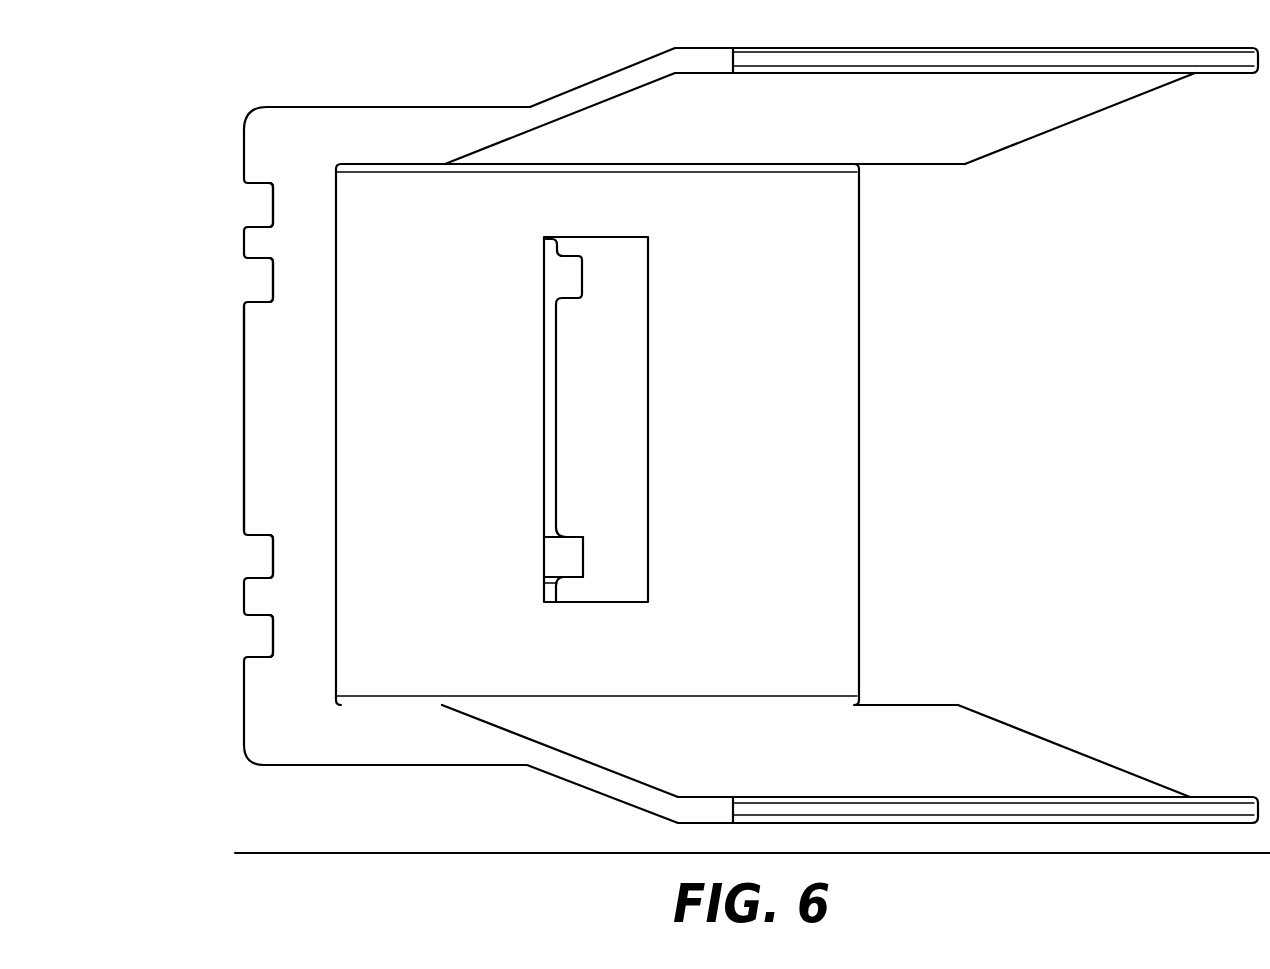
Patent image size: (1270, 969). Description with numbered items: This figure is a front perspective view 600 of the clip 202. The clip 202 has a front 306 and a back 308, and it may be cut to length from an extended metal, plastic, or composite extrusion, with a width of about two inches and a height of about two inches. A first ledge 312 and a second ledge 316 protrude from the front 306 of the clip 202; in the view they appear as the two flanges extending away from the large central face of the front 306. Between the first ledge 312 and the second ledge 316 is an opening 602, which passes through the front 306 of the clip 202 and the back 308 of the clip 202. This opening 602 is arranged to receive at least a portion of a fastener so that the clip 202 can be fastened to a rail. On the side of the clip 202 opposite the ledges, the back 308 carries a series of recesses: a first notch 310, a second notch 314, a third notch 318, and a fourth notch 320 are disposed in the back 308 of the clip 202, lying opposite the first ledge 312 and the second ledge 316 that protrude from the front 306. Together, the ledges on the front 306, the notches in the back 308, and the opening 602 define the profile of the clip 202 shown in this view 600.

The clip 202 is at (230, 97).
The front 306 is at (455, 449).
The back 308 is at (243, 434).
The first notch 310 is at (256, 206).
The first ledge 312 is at (690, 48).
The second notch 314 is at (256, 632).
The second ledge 316 is at (696, 822).
The third notch 318 is at (256, 279).
The fourth notch 320 is at (256, 558).
The front perspective view 600 is at (938, 854).
The opening 602 is at (618, 418).